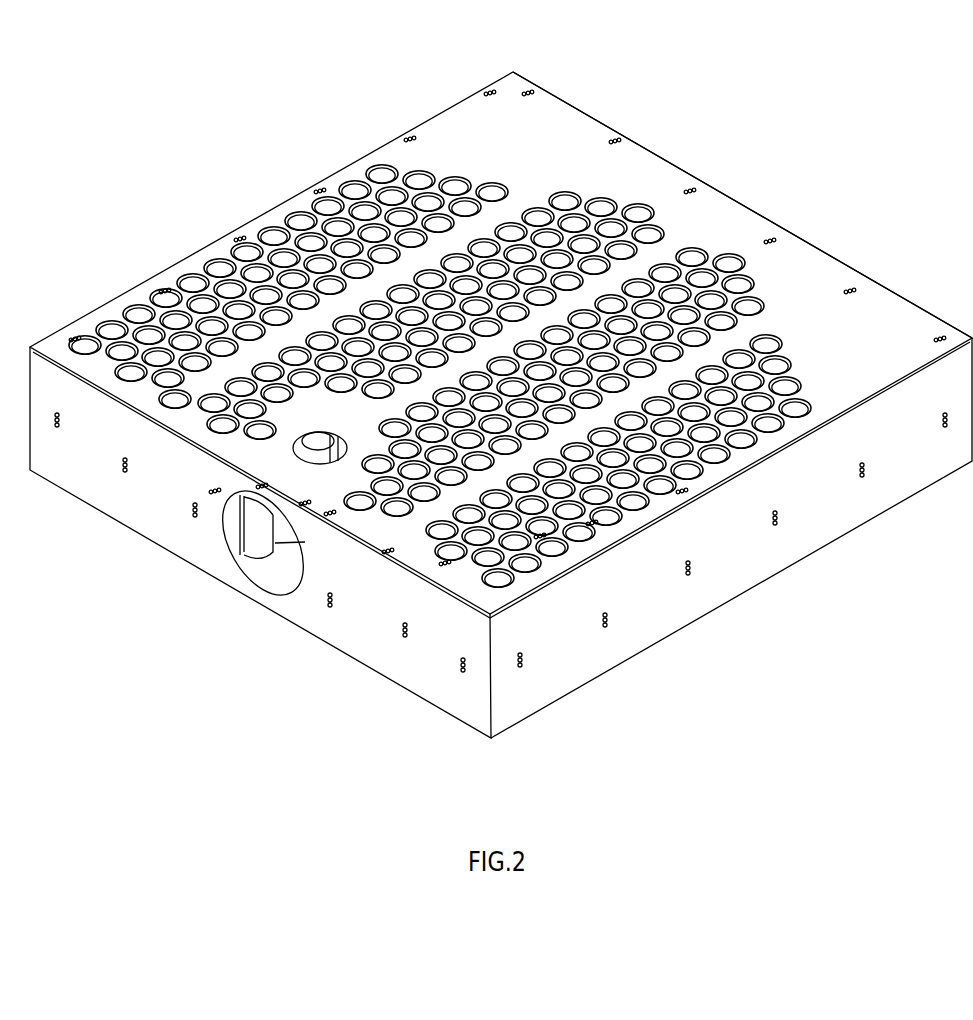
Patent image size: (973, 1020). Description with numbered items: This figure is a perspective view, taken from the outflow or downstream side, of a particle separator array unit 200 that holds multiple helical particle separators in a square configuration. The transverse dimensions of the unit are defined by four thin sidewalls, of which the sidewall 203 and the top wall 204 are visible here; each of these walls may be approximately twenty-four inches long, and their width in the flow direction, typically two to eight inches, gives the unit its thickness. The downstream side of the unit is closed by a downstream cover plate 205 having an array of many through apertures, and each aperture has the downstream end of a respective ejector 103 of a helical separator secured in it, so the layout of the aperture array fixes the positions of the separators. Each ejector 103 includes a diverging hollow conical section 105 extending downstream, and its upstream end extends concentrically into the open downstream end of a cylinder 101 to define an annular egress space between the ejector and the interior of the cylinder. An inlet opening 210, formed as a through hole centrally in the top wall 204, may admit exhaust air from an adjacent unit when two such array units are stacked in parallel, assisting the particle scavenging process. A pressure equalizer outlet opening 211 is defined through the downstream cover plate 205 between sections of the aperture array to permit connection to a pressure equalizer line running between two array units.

The particle separator array unit 200 is at (709, 87).
The cylinder 101 is at (490, 381).
The ejector 103 is at (293, 215).
The conical section 105 is at (286, 432).
The sidewall 203 is at (899, 488).
The top wall 204 is at (408, 668).
The downstream cover plate 205 is at (571, 112).
The inlet opening 210 is at (290, 594).
The pressure equalizer outlet opening 211 is at (255, 547).